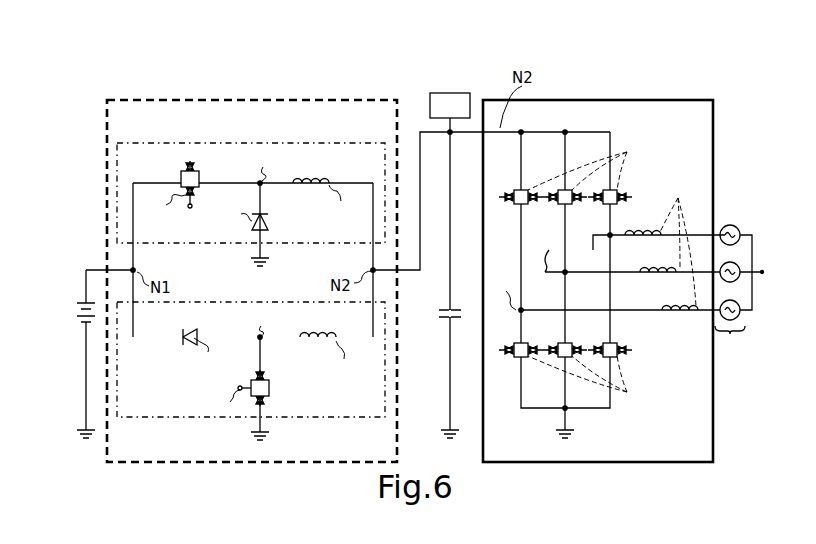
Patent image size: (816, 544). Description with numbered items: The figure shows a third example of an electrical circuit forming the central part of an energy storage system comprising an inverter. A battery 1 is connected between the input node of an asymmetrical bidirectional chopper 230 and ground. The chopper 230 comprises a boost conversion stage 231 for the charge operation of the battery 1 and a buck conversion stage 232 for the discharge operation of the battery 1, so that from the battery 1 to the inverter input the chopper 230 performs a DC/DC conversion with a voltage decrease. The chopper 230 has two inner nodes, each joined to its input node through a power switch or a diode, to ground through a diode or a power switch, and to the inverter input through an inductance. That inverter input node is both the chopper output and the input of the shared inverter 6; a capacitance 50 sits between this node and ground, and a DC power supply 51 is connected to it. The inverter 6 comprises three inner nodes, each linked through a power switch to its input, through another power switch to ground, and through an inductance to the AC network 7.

The battery 1 is at (80, 322).
The asymmetrical bidirectional chopper 230 is at (262, 462).
The boost conversion stage 231 is at (188, 417).
The buck conversion stage 232 is at (245, 144).
The capacitance 50 is at (440, 314).
The DC power supply 51 is at (450, 93).
The shared inverter 6 is at (600, 462).
The AC network 7 is at (732, 334).